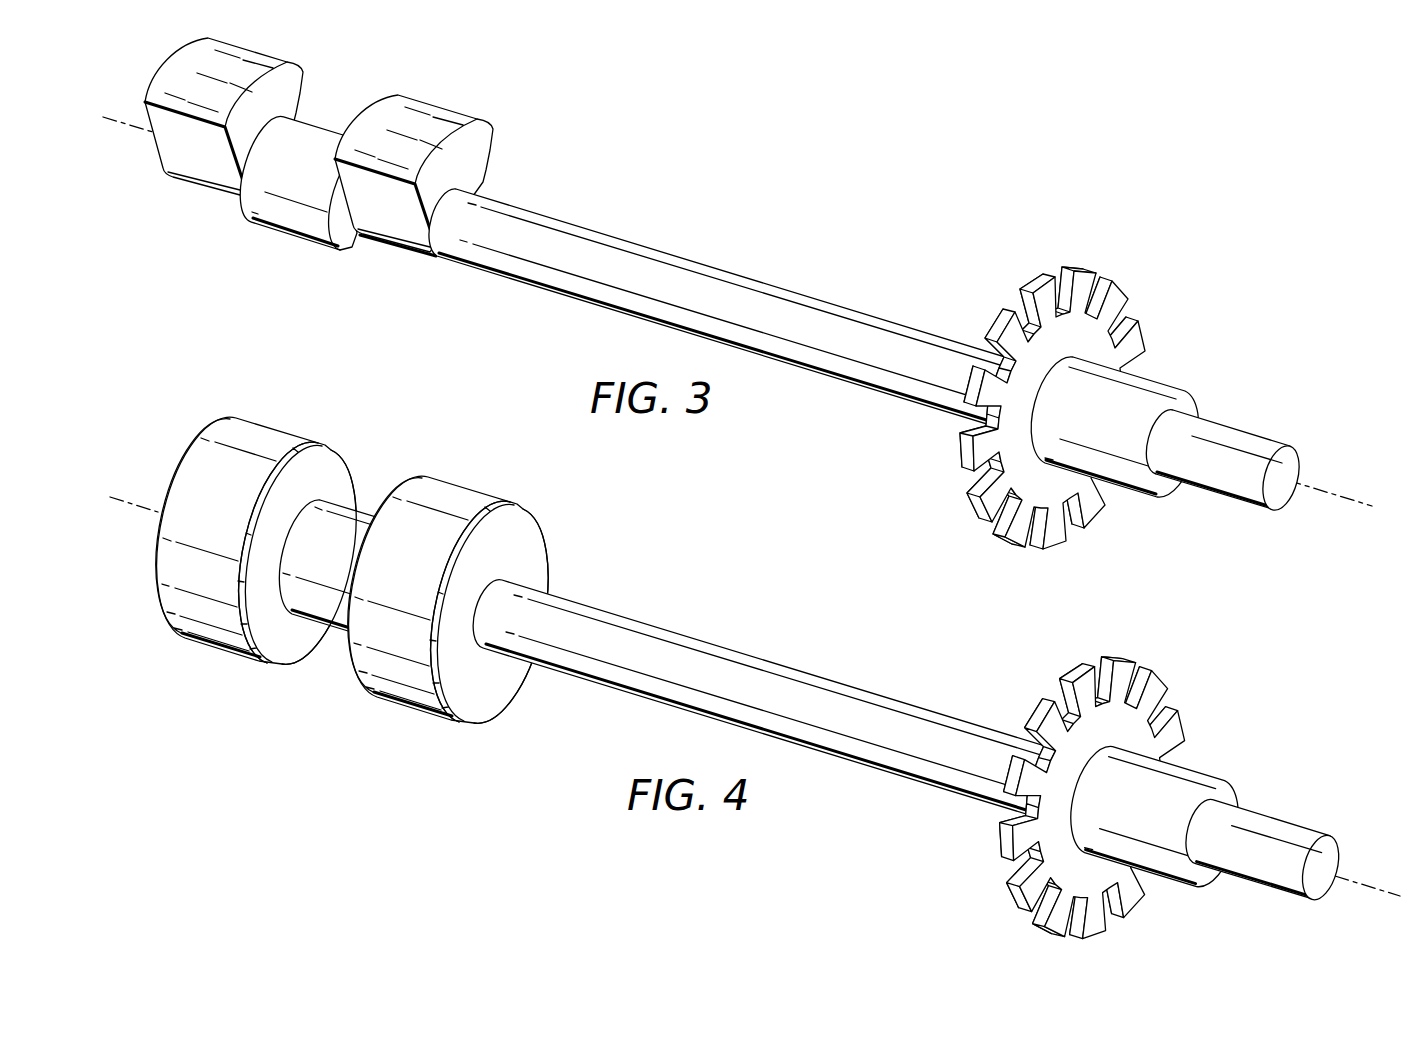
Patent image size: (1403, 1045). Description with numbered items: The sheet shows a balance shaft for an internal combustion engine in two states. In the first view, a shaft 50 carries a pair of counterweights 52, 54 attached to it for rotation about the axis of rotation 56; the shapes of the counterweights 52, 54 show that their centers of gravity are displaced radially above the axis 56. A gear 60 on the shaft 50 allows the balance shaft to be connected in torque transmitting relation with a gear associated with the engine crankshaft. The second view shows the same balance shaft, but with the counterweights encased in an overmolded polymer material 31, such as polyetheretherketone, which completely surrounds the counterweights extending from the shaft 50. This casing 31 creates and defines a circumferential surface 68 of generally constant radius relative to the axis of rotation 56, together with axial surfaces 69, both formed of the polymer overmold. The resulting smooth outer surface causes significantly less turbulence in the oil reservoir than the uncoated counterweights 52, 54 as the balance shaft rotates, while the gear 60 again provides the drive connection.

In FIG. 4, the overmolded polymer material 31 is at (272, 435).
In FIG. 3, the shaft 50 is at (617, 242).
In FIG. 4, the shaft 50 is at (777, 690).
In FIG. 3, the counterweight 52 is at (294, 89).
In FIG. 3, the counterweight 54 is at (481, 146).
In FIG. 3, the axis of rotation 56 is at (1320, 493).
In FIG. 4, the axis of rotation 56 is at (125, 497).
In FIG. 3, the gear 60 is at (1101, 291).
In FIG. 4, the gear 60 is at (1137, 670).
In FIG. 4, the circumferential surface 68 is at (218, 637).
In FIG. 4, the axial surface 69 is at (342, 478).